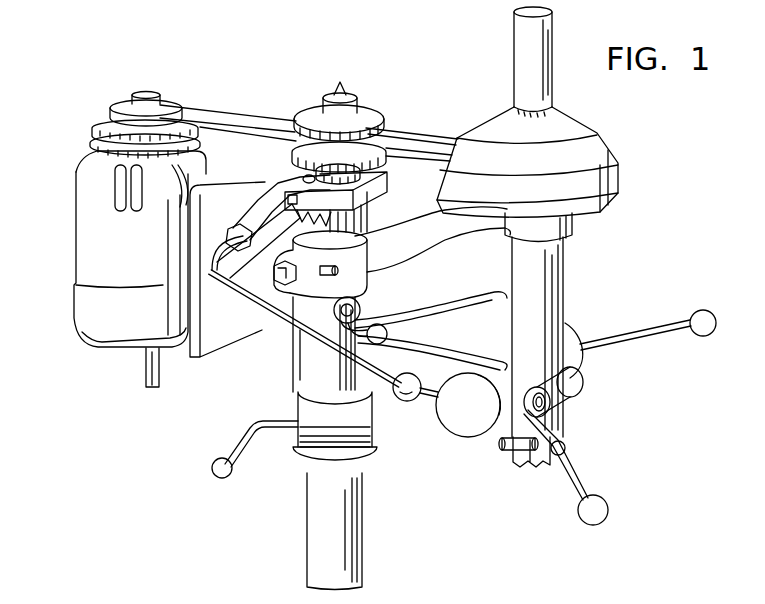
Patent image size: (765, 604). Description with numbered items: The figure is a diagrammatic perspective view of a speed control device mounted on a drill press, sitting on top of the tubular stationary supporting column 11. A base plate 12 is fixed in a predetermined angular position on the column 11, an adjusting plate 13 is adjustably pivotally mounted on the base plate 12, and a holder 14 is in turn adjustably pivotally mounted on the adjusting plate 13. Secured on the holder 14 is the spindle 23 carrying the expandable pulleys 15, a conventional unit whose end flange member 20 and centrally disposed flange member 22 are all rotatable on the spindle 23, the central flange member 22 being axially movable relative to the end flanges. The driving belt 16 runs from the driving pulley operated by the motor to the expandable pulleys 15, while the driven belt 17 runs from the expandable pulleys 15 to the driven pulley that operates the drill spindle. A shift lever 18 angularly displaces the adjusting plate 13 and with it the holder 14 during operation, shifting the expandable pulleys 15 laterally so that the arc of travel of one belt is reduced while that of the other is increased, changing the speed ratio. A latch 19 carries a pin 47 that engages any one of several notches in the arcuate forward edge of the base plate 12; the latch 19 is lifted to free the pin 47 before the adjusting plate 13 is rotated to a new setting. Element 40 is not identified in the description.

The tubular stationary supporting column 11 is at (335, 228).
The base plate 12 is at (366, 206).
The adjusting plate 13 is at (380, 190).
The holder 14 is at (290, 158).
The expandable pulleys 15 is at (341, 98).
The driving belt 16 is at (238, 114).
The driven belt 17 is at (432, 142).
The shift lever 18 is at (262, 303).
The latch 19 is at (246, 218).
The end flange member 20 is at (303, 112).
The centrally disposed flange member 22 is at (268, 140).
The spindle 23 is at (355, 95).
The gear teeth 40 is at (330, 205).
The pin 47 is at (255, 285).